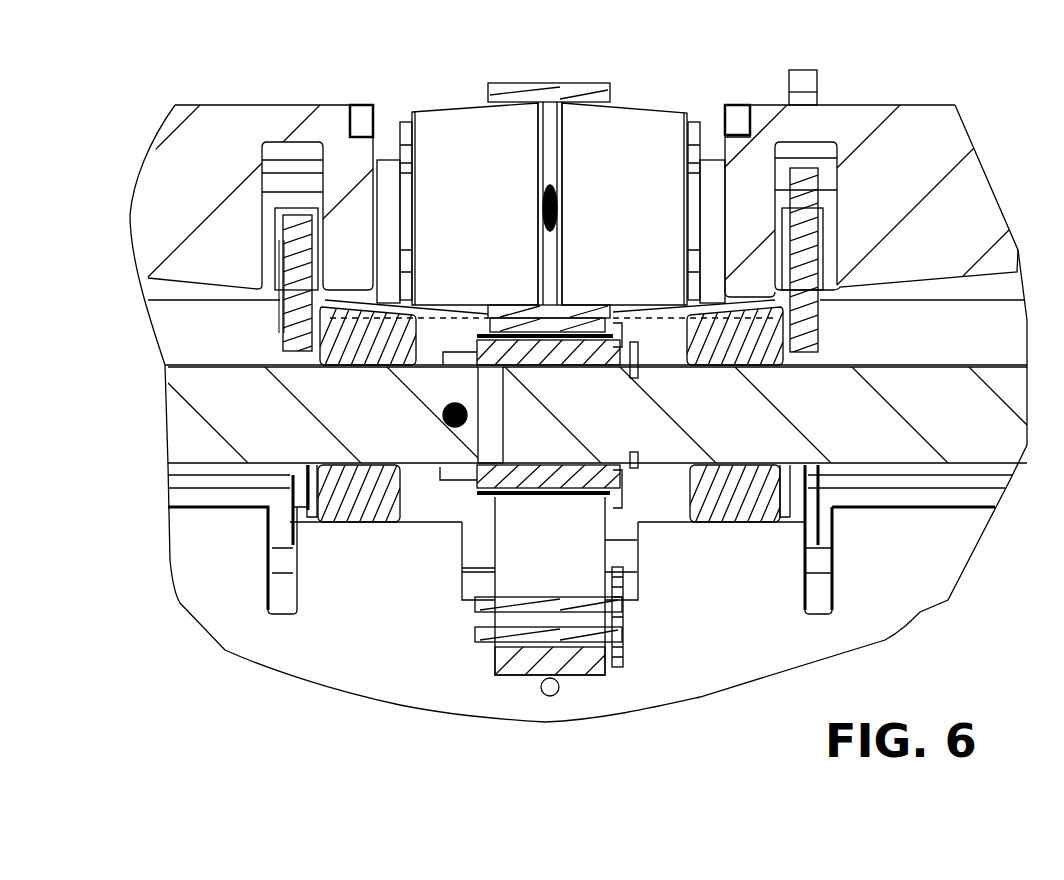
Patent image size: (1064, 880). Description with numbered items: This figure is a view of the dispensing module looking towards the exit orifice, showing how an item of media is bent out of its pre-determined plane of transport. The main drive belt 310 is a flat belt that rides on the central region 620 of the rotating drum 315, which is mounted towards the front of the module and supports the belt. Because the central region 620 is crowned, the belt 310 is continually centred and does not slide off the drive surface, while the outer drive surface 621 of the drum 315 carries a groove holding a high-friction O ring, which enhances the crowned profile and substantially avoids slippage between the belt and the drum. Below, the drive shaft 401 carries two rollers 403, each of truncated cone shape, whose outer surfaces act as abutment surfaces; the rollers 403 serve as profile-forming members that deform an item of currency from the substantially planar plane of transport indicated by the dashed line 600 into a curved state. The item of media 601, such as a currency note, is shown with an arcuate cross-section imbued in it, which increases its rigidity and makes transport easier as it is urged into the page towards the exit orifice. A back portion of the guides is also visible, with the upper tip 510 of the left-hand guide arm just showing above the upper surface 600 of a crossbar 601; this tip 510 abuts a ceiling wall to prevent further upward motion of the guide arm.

The plane of transport 600 is at (250, 103).
The item of media 601 is at (905, 155).
The drum 315 is at (442, 133).
The main drive belt 310 is at (522, 93).
The central region 620 is at (570, 152).
The outer drive surface 621 is at (648, 152).
The upper tip 510 is at (805, 75).
The drive shaft 401 is at (186, 438).
The rollers 403 is at (718, 492).